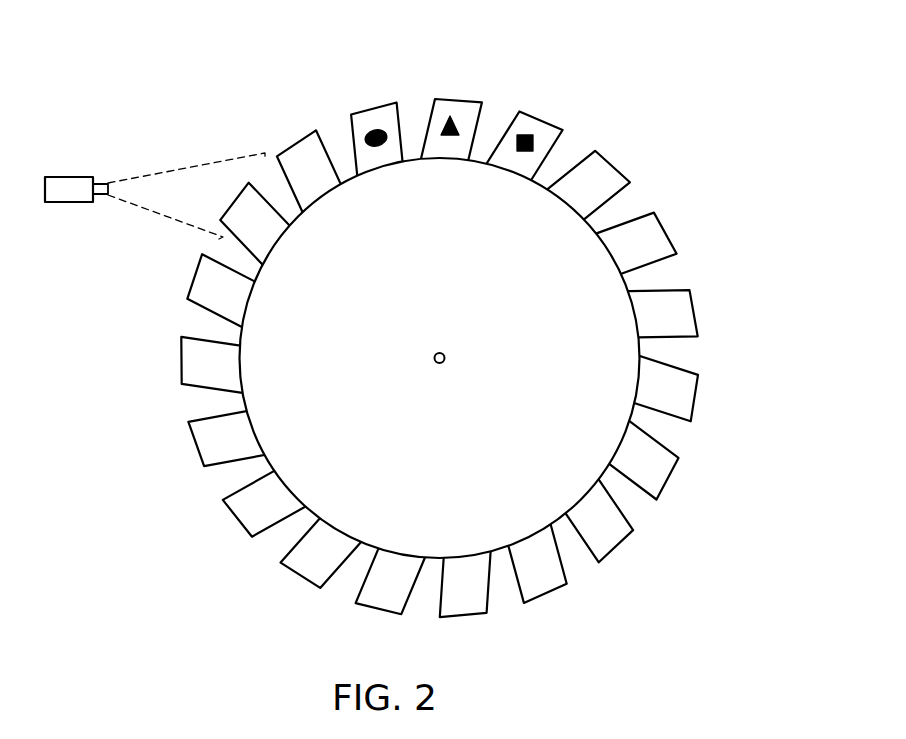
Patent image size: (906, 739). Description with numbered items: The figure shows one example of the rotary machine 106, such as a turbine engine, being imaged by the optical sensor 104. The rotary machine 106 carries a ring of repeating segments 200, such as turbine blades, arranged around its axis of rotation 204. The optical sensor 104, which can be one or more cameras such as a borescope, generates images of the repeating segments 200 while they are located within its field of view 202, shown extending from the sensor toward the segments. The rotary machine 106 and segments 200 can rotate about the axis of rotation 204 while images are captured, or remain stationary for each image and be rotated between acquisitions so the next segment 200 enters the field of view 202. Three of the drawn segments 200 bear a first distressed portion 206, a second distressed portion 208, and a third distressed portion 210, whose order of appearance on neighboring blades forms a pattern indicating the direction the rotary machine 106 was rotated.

The optical sensor 104 is at (70, 175).
The rotary machine 106 is at (617, 163).
The repeating segments 200 is at (372, 110).
The field of view 202 is at (185, 166).
The axis of rotation 204 is at (697, 308).
The first distressed portion 206 is at (368, 132).
The second distressed portion 208 is at (452, 122).
The third distressed portion 210 is at (527, 134).